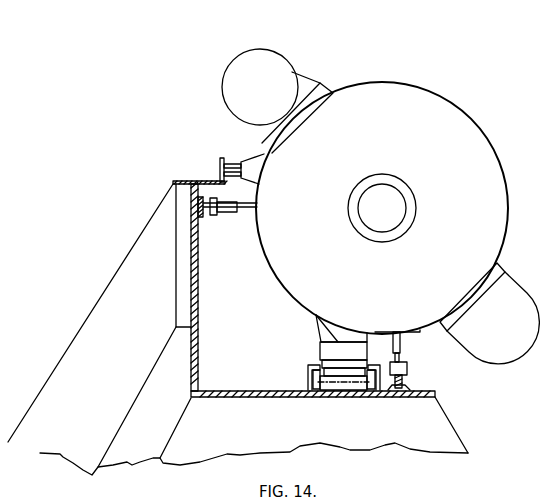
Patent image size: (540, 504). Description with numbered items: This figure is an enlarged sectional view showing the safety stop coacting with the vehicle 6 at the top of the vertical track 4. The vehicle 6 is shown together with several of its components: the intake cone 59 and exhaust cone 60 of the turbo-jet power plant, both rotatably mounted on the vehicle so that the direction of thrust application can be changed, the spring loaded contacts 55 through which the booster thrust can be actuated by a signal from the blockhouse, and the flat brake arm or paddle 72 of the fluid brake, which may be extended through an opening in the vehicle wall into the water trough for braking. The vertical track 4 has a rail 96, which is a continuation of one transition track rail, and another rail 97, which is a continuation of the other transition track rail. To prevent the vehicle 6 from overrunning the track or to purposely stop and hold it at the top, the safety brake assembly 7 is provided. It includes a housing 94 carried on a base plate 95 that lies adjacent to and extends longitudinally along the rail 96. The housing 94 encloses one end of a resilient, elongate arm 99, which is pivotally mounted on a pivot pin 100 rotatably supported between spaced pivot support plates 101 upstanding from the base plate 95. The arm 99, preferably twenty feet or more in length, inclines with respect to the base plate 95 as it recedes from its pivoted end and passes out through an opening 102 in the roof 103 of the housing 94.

The vertical track 4 is at (150, 195).
The vehicle 6 is at (441, 104).
The safety brake assembly 7 is at (300, 383).
The spring loaded contacts 55 is at (220, 165).
The intake cone 59 is at (227, 93).
The exhaust cone 60 is at (510, 360).
The brake arm or paddle 72 is at (316, 317).
The housing 94 is at (308, 368).
The base plate 95 is at (434, 393).
The rail 96 is at (404, 383).
The rail 97 is at (204, 209).
The resilient elongate arm 99 is at (347, 344).
The pivot pin 100 is at (337, 386).
The pivot support plates 101 is at (314, 390).
The opening 102 is at (324, 362).
The roof 103 is at (375, 366).